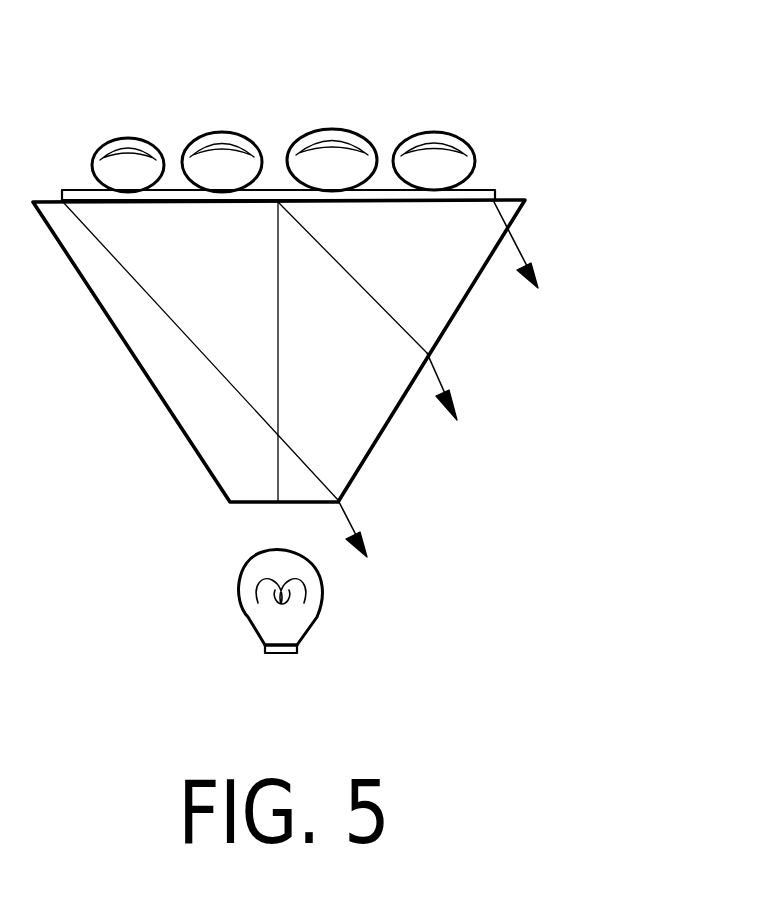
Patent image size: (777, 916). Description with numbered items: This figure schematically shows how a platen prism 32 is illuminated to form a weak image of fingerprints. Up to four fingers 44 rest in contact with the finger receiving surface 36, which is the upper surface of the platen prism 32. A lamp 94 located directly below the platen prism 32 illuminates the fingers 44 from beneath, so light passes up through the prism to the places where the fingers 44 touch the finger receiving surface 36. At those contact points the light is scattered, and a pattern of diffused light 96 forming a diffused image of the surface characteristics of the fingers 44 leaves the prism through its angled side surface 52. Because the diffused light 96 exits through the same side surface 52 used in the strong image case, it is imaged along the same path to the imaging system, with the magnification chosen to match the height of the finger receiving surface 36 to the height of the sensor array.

The platen prism 32 is at (248, 282).
The finger receiving surface 36 is at (485, 190).
The fingers 44 is at (423, 132).
The side surface 52 is at (377, 428).
The lamp 94 is at (240, 592).
The diffused light 96 is at (350, 515).